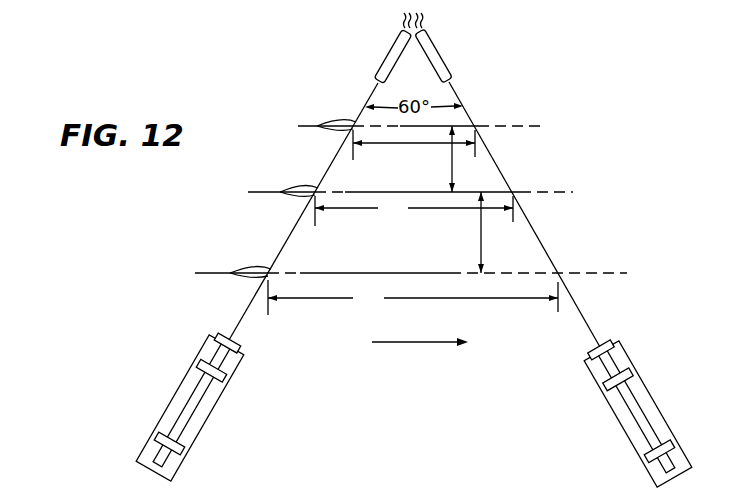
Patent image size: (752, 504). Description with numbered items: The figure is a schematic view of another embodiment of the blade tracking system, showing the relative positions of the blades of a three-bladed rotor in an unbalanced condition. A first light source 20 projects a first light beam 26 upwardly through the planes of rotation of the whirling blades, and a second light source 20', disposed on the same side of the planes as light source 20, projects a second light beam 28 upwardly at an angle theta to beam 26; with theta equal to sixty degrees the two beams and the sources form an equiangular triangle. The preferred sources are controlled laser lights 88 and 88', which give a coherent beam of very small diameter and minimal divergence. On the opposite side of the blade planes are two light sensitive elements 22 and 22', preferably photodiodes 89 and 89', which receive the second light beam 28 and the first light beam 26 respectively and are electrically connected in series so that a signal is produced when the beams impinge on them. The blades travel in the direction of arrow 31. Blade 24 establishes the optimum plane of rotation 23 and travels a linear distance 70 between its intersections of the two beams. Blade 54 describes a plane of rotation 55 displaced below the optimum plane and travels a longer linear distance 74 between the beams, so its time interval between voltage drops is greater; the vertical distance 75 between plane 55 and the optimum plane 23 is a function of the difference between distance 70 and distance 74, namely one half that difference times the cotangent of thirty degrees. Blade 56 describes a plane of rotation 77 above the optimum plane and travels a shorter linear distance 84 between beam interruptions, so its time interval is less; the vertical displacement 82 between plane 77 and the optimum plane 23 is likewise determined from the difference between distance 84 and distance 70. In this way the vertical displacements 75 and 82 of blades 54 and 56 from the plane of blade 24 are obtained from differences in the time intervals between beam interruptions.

The light source 20 is at (616, 413).
The second light source 20' is at (231, 406).
The light sensitive element 22 is at (373, 57).
The light sensitive element 22' is at (466, 56).
The optimum plane of rotation 23 is at (530, 192).
The blade 24 is at (309, 184).
The first light beam 26 is at (467, 112).
The second light beam 28 is at (367, 100).
The arrow 31 is at (411, 343).
The blade 54 is at (259, 268).
The plane of rotation 55 is at (577, 273).
The blade 56 is at (347, 121).
The linear distance 70 is at (414, 207).
The linear distance 74 is at (413, 297).
The vertical distance 75 is at (483, 250).
The plane of rotation 77 is at (530, 126).
The vertical displacement 82 is at (453, 168).
The linear distance 84 is at (414, 154).
The controlled laser light 88 is at (627, 403).
The controlled laser light 88' is at (206, 393).
The photodiode 89 is at (387, 26).
The photodiode 89' is at (451, 35).